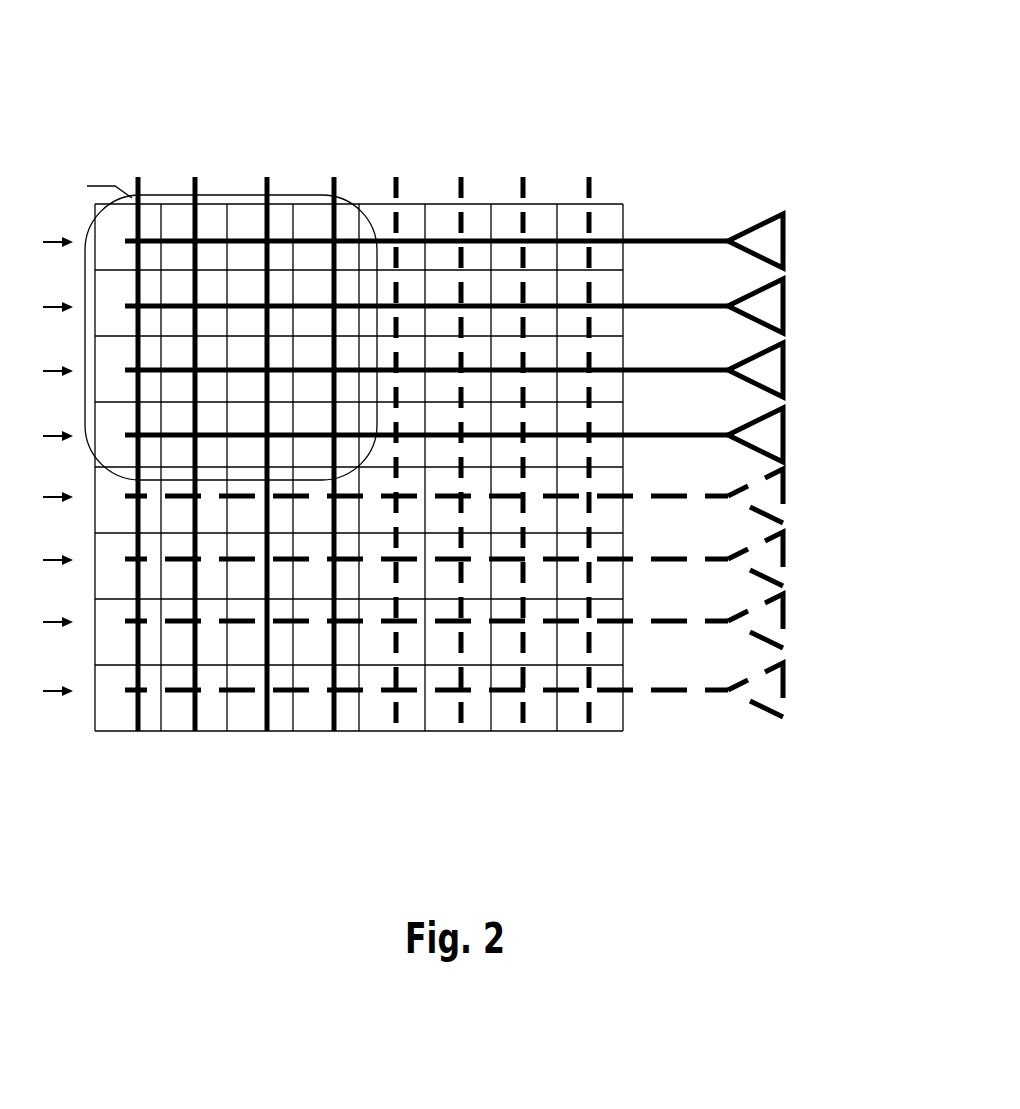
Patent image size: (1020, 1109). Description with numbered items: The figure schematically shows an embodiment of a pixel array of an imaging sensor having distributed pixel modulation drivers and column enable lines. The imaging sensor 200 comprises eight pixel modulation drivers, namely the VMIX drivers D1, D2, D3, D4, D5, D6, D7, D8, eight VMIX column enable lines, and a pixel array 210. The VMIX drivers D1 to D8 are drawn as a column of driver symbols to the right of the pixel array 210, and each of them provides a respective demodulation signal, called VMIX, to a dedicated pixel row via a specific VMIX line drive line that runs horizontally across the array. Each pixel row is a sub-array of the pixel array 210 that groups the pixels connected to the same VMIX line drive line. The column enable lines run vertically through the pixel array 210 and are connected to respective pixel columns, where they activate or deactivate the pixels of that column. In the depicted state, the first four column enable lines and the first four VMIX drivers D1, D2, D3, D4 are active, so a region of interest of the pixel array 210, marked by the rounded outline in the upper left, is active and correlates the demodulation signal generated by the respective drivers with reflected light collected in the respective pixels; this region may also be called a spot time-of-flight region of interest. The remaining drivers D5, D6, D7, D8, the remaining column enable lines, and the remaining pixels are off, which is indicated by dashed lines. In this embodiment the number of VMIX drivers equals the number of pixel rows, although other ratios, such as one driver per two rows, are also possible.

The imaging sensor 200 is at (557, 78).
The pixel array 210 is at (624, 204).
The VMIX driver D1 is at (785, 236).
The VMIX driver D2 is at (785, 301).
The VMIX driver D3 is at (785, 365).
The VMIX driver D4 is at (785, 430).
The VMIX driver D5 is at (785, 493).
The VMIX driver D6 is at (785, 556).
The VMIX driver D7 is at (785, 618).
The VMIX driver D8 is at (785, 687).